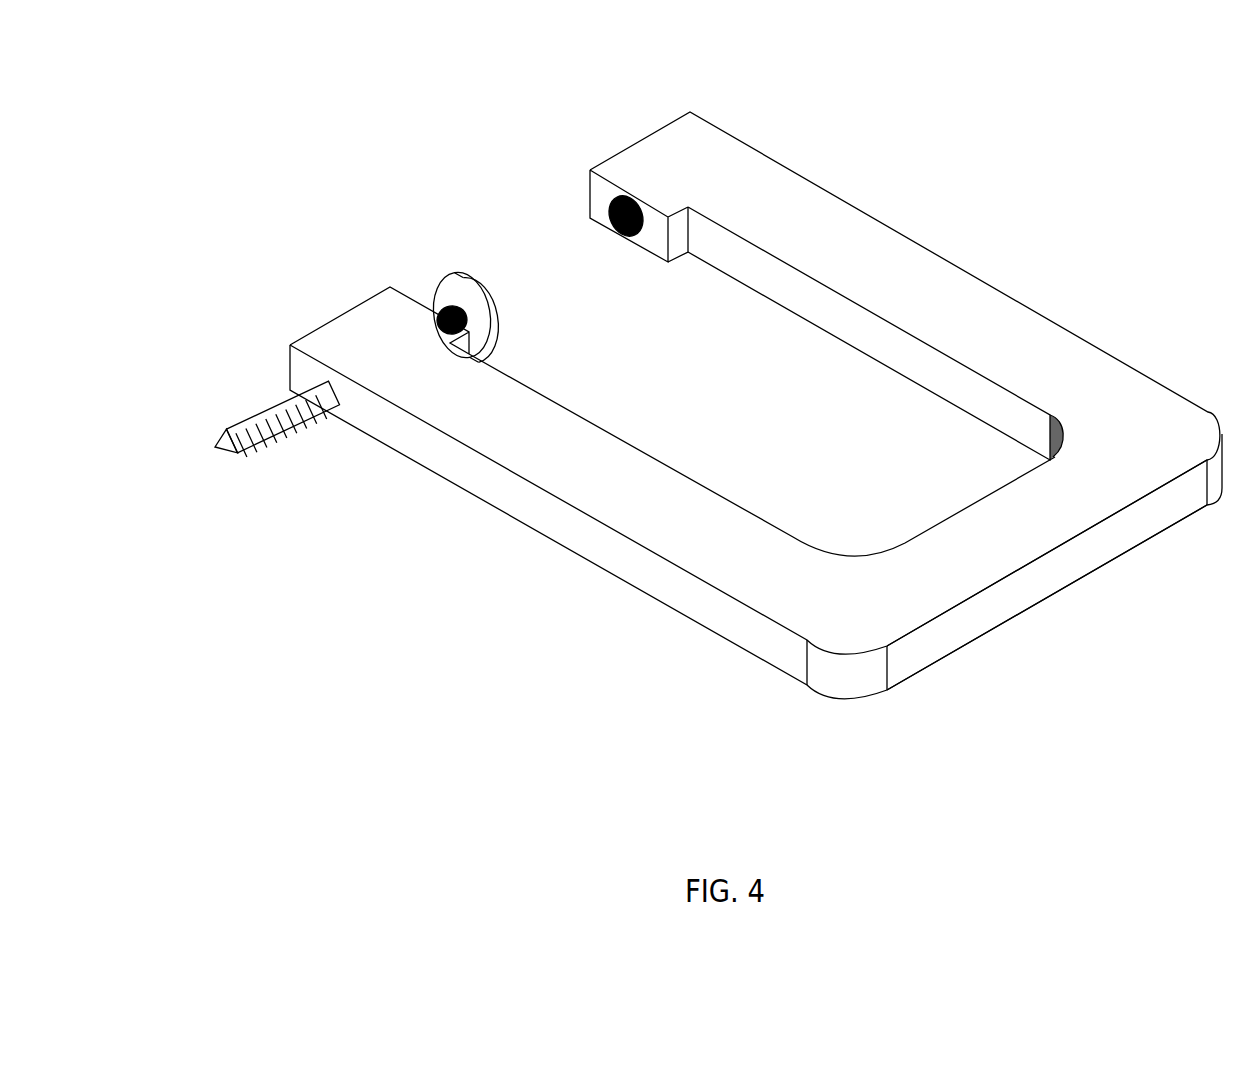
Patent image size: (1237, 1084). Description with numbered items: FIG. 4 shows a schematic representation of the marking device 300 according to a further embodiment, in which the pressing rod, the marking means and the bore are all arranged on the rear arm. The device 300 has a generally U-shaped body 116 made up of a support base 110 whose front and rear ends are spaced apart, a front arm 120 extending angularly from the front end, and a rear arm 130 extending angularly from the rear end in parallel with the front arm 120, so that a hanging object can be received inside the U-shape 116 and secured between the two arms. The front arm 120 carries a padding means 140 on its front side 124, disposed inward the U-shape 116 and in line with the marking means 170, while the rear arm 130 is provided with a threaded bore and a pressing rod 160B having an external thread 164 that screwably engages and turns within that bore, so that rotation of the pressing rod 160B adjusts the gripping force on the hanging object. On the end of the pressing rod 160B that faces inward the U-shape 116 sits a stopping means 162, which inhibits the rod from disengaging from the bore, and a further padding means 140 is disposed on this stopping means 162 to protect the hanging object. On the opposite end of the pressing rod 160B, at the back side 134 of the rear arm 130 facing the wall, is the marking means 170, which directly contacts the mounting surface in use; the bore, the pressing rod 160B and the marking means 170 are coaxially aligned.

The marking device 300 is at (340, 120).
The support base 110 is at (1052, 580).
The U-shaped body 116 is at (762, 455).
The front arm 120 is at (638, 135).
The front side 124 is at (890, 352).
The rear arm 130 is at (333, 305).
The back side 134 is at (723, 622).
The padding means 140 is at (626, 232).
The pressing rod 160B is at (277, 437).
The stopping means 162 is at (462, 275).
The external thread 164 is at (267, 402).
The marking means 170 is at (228, 458).